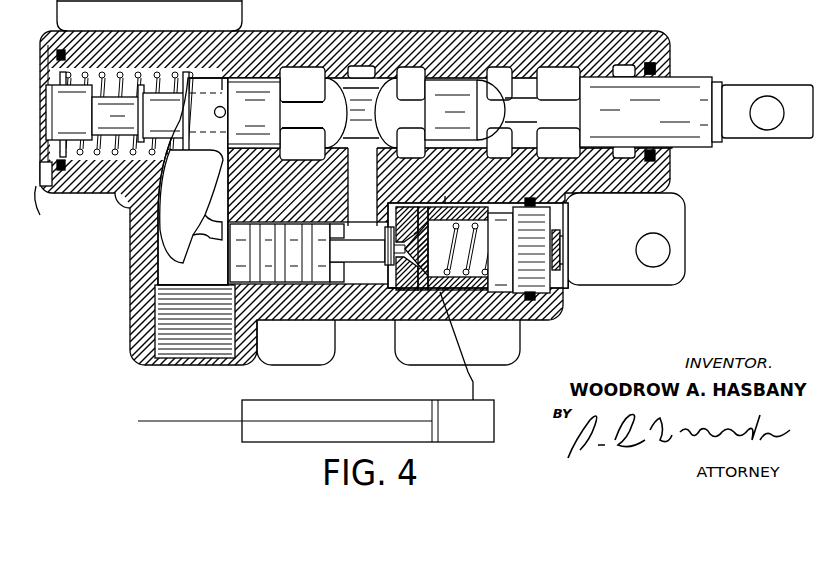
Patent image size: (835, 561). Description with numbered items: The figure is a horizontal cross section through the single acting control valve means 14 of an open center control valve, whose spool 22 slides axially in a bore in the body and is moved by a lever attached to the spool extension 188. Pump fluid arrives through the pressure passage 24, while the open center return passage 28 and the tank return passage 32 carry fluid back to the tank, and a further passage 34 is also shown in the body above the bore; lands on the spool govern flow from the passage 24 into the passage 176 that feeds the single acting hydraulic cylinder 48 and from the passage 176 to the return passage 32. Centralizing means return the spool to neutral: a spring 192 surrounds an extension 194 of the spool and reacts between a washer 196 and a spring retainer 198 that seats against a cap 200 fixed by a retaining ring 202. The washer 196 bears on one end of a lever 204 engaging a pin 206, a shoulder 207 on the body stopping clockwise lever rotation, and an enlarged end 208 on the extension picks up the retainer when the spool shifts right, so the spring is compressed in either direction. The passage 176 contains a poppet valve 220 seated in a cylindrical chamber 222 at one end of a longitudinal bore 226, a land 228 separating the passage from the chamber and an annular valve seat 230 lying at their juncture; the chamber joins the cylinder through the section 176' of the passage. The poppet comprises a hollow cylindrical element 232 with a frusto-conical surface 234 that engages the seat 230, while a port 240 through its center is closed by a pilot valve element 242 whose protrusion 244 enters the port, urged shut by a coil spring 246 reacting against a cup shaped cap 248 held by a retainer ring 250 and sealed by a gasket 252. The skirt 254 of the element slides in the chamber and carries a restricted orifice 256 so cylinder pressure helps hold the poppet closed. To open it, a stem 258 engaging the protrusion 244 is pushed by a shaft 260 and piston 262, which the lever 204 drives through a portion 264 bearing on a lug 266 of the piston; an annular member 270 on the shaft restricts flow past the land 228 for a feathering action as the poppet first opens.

The single acting control valve means 14 is at (683, 163).
The spool 22 is at (636, 121).
The passage 24 is at (305, 70).
The open center fluid return passage 28 is at (565, 70).
The tank return passage 32 is at (408, 70).
The port 34 is at (493, 70).
The single acting hydraulic cylinder 48 is at (305, 407).
The passage 176 is at (362, 187).
The section of passage 176' is at (461, 182).
The spool extension 188 is at (792, 130).
The spring 192 is at (137, 97).
The extension 194 is at (155, 120).
The washer 196 is at (186, 95).
The spring retainer 198 is at (62, 120).
The cap 200 is at (43, 192).
The retaining ring 202 is at (65, 182).
The lever 204 is at (188, 188).
The pin 206 is at (226, 112).
The shoulder 207 is at (237, 70).
The enlarged end 208 is at (95, 72).
The poppet valve 220 is at (530, 350).
The cylindrical chamber 222 is at (568, 290).
The longitudinal bore 226 is at (330, 322).
The land 228 is at (388, 292).
The annular valve seat 230 is at (405, 203).
The hollow cylindrical element 232 is at (460, 207).
The frusto-conically shaped surface 234 is at (403, 318).
The port 240 is at (417, 207).
The valve element 242 is at (508, 216).
The protrusion 244 is at (433, 292).
The coil spring 246 is at (590, 164).
The cup shaped cap 248 is at (552, 228).
The retainer ring 250 is at (564, 270).
The gasket 252 is at (540, 302).
The skirt 254 is at (488, 290).
The restricted orifice 256 is at (425, 292).
The stem 258 is at (345, 284).
The shaft 260 is at (338, 232).
The piston 262 is at (287, 222).
The portion 264 is at (190, 262).
The lug 266 is at (210, 243).
The annular member 270 is at (367, 246).